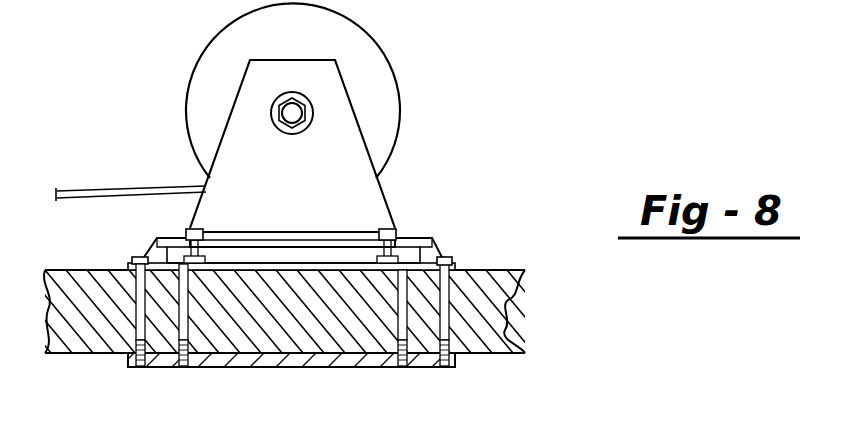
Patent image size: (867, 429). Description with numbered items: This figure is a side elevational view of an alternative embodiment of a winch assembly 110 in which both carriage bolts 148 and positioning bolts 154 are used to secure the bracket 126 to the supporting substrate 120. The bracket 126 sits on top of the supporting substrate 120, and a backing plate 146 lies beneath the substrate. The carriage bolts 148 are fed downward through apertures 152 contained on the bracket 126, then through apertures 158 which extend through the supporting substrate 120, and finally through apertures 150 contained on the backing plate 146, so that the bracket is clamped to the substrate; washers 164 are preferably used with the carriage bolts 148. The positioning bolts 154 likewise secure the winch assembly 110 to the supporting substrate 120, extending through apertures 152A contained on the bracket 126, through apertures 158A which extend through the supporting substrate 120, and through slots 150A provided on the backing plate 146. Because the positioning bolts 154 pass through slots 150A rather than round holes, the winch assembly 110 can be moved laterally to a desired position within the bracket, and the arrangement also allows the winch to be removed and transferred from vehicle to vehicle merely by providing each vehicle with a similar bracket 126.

The winch assembly 110 is at (462, 106).
The supporting substrate 120 is at (500, 290).
The bracket 126 is at (436, 247).
The backing plate 146 is at (352, 370).
The carriage bolts 148 is at (200, 300).
The apertures 150 is at (431, 366).
The slots 150A is at (458, 364).
The apertures 152 is at (360, 247).
The apertures 152A is at (130, 265).
The positioning bolts 154 is at (136, 334).
The apertures 158 is at (205, 362).
The apertures 158A is at (92, 277).
The washers 164 is at (453, 276).